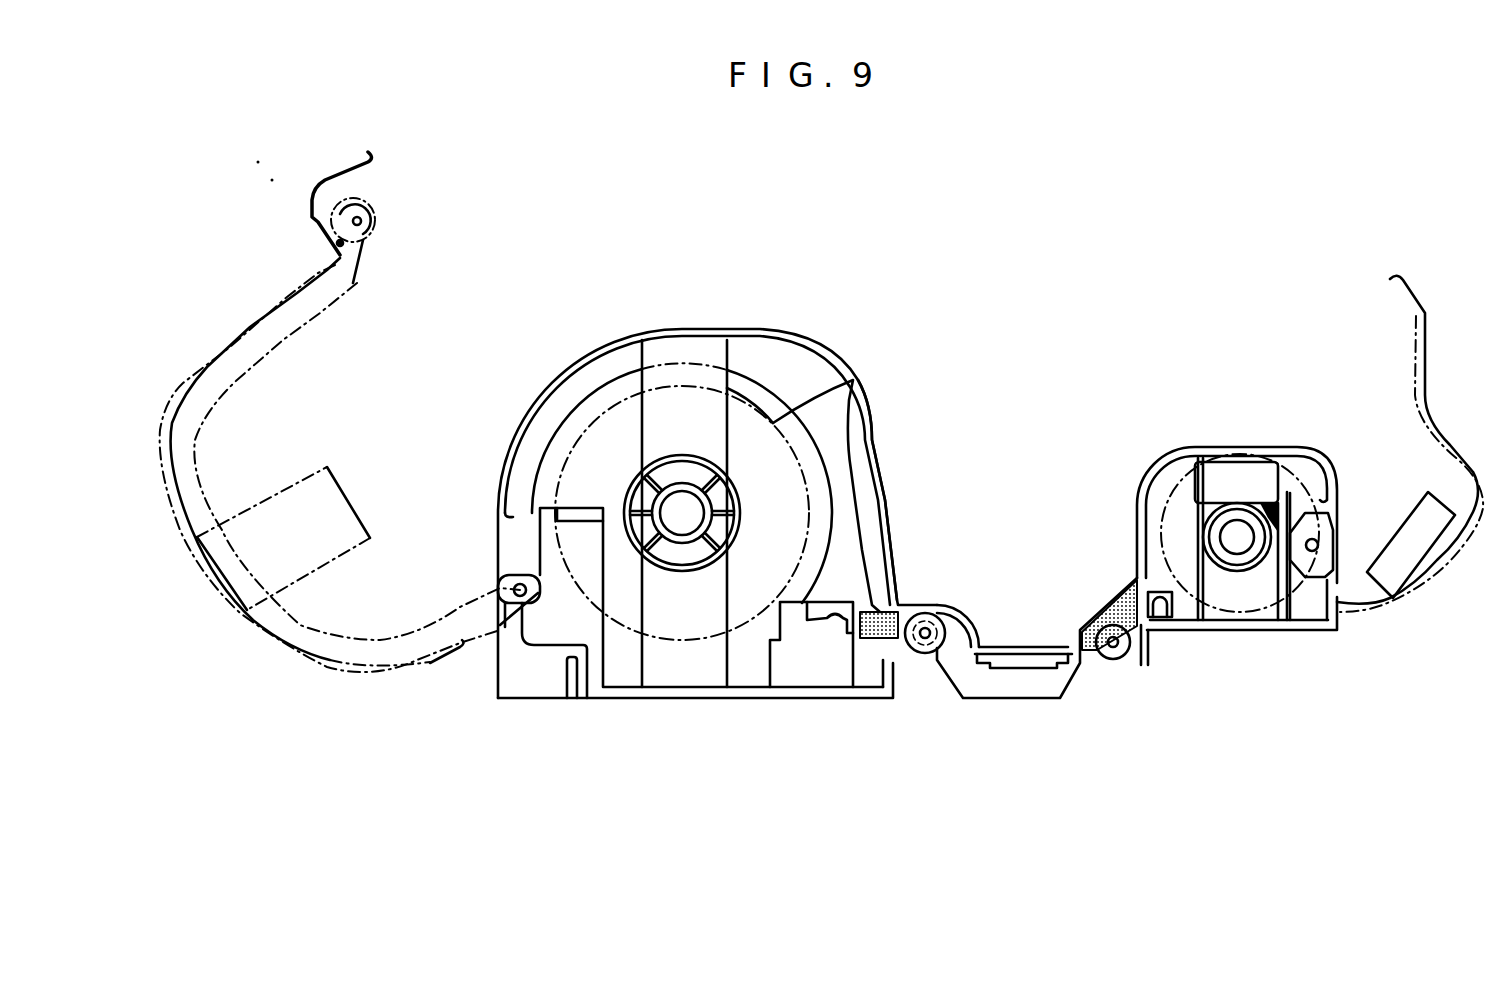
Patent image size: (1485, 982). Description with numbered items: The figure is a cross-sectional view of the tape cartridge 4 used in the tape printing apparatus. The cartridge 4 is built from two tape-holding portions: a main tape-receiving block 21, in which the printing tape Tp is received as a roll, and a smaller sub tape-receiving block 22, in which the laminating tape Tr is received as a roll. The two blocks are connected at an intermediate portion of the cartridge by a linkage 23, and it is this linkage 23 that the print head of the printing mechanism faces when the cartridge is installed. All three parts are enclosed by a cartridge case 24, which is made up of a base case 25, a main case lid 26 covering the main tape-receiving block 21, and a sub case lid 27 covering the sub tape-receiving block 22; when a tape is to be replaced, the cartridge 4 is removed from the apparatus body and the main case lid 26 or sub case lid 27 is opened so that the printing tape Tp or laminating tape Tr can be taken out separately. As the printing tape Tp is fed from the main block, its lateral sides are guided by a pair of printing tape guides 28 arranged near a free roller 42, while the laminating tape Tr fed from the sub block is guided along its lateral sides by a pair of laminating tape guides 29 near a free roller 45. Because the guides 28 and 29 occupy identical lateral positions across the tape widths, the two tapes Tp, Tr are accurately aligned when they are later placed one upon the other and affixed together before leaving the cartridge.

The tape cartridge 4 is at (856, 264).
The main tape-receiving block 21 is at (759, 372).
The sub tape-receiving block 22 is at (1156, 485).
The linkage 23 is at (1025, 698).
The cartridge case 24 is at (893, 484).
The base case 25 is at (683, 699).
The main case lid 26 is at (582, 360).
The sub case lid 27 is at (1278, 447).
The printing tape guides 28 is at (896, 606).
The laminating tape guides 29 is at (1110, 595).
The free roller 42 is at (925, 656).
The free roller 45 is at (1113, 660).
The printing tape Tp is at (858, 366).
The laminating tape Tr is at (1170, 495).